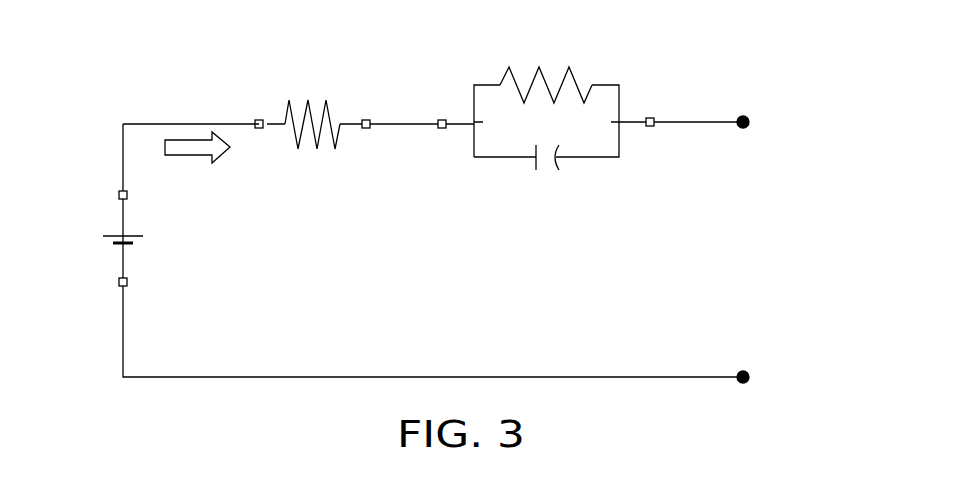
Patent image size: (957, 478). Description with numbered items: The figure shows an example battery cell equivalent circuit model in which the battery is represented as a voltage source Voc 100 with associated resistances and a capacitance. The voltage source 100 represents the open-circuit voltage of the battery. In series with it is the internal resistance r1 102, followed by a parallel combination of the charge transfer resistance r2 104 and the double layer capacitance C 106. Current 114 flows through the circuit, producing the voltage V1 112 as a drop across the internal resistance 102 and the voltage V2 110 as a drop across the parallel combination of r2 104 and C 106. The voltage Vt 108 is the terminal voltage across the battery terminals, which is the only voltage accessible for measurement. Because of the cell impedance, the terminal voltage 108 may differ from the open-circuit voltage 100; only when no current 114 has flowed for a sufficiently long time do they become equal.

The voltage source Voc 100 is at (133, 234).
The internal resistance r1 102 is at (285, 112).
The charge transfer resistance r2 104 is at (551, 114).
The double layer capacitance C 106 is at (526, 170).
The terminal voltage Vt 108 is at (753, 240).
The voltage V2 110 is at (530, 123).
The voltage V1 112 is at (318, 188).
The current 114 is at (178, 99).